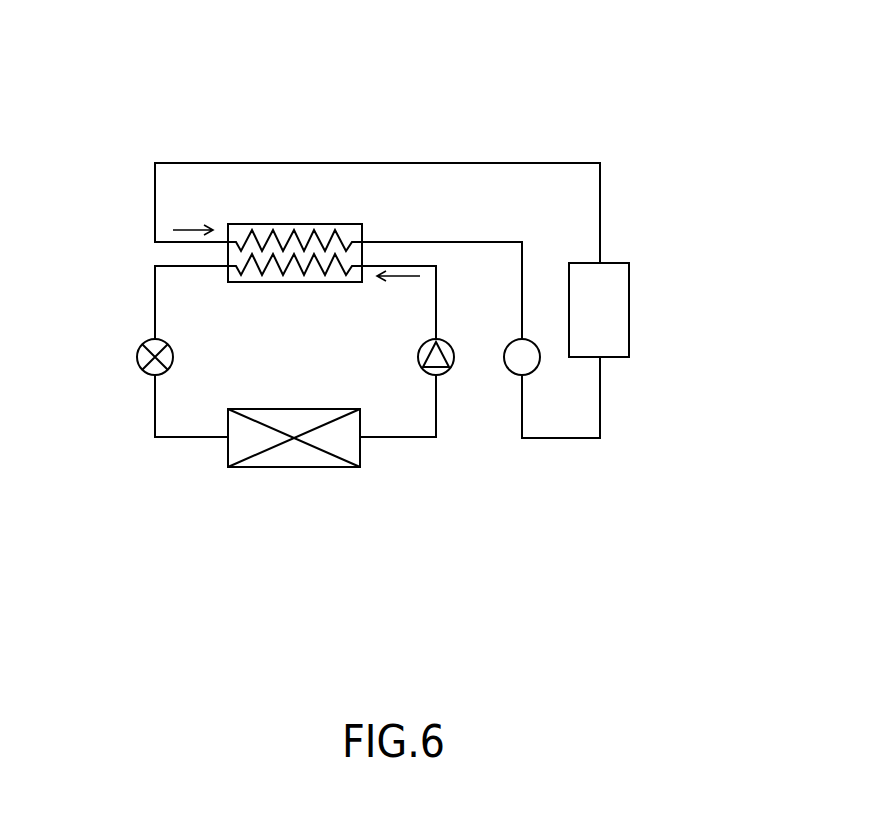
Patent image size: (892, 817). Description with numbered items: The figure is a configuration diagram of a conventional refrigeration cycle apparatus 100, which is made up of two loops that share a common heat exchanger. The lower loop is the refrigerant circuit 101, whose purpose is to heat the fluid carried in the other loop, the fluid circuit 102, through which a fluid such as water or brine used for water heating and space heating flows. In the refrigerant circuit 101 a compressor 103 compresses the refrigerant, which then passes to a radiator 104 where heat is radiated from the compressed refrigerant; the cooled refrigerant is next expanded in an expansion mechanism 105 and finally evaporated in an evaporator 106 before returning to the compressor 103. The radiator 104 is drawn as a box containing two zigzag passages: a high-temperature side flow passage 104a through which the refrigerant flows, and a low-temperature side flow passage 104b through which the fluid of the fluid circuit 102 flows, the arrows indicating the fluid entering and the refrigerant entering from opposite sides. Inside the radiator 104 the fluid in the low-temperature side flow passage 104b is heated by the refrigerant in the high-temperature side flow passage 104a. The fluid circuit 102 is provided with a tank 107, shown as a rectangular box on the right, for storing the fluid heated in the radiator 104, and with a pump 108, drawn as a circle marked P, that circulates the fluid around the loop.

The refrigeration cycle apparatus 100 is at (470, 122).
The refrigerant circuit 101 is at (390, 468).
The fluid circuit 102 is at (558, 455).
The compressor 103 is at (420, 353).
The radiator 104 is at (272, 283).
The high-temperature side flow passage 104a is at (308, 268).
The low-temperature side flow passage 104b is at (282, 238).
The expansion mechanism 105 is at (139, 361).
The evaporator 106 is at (250, 468).
The tank 107 is at (629, 306).
The pump 108 is at (510, 370).